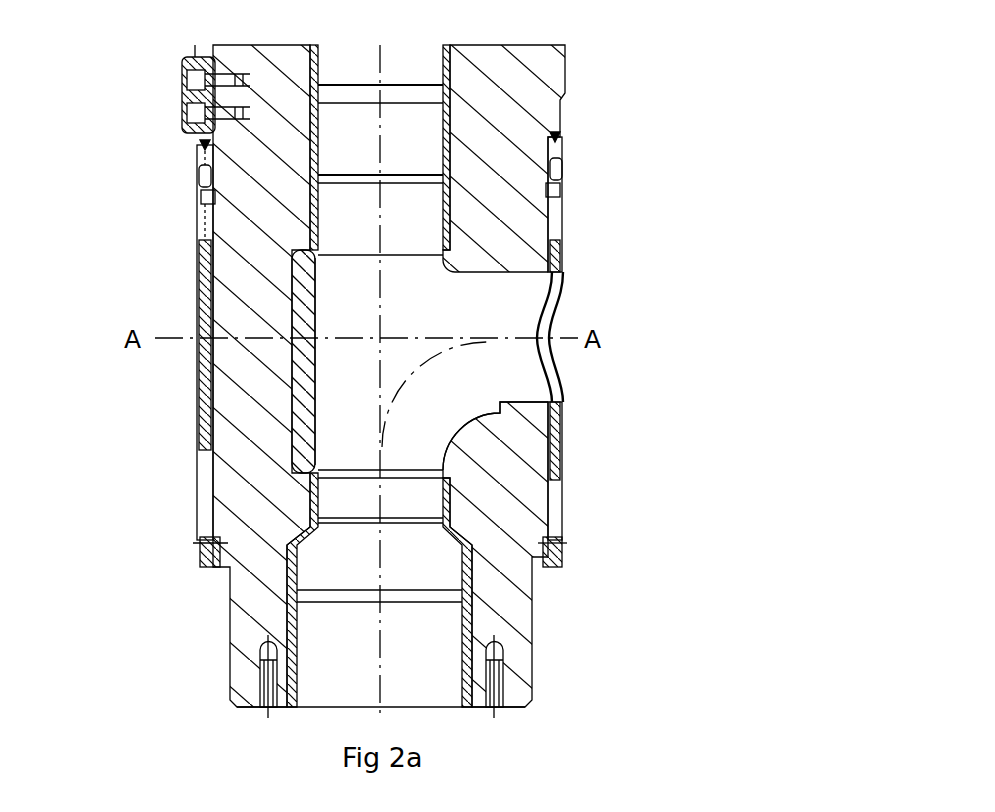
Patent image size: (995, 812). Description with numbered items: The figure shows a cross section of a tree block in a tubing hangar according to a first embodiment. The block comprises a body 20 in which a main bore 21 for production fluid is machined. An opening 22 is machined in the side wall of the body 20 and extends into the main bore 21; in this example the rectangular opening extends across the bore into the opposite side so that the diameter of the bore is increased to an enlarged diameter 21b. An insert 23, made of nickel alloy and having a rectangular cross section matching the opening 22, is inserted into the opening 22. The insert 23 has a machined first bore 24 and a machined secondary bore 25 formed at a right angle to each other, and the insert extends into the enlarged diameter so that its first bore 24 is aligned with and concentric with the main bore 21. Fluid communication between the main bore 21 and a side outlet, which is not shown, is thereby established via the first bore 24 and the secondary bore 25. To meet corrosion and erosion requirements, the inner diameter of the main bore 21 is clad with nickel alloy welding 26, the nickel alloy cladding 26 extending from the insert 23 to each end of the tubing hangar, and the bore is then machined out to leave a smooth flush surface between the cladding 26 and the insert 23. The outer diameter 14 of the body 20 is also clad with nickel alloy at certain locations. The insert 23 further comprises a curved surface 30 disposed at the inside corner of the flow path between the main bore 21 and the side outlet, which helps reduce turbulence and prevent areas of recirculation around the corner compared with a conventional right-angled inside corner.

The outer diameter 14 is at (213, 372).
The body 20 is at (505, 575).
The main bore 21 is at (435, 668).
The enlarged diameter 21b is at (290, 302).
The opening 22 is at (507, 362).
The insert 23 is at (513, 438).
The first bore 24 is at (342, 396).
The secondary bore 25 is at (508, 303).
The nickel alloy cladding 26 is at (312, 128).
The curved surface 30 is at (500, 421).